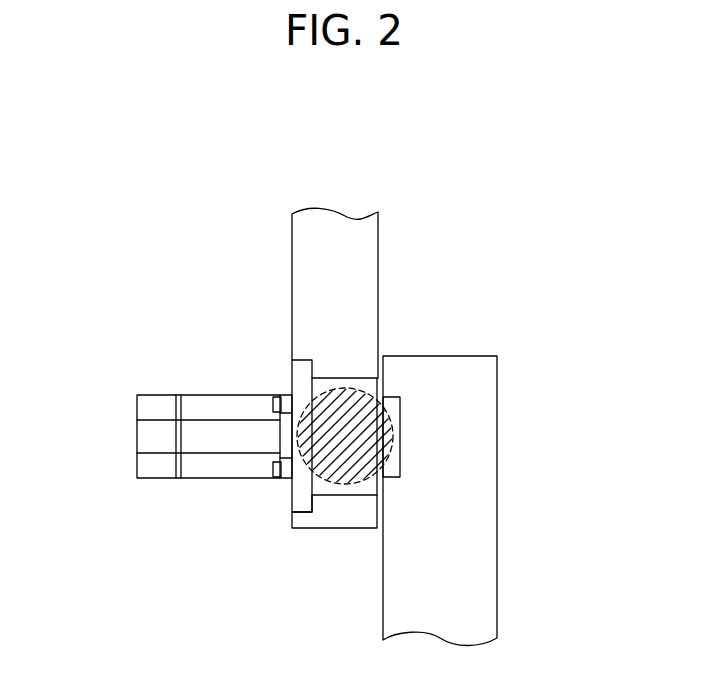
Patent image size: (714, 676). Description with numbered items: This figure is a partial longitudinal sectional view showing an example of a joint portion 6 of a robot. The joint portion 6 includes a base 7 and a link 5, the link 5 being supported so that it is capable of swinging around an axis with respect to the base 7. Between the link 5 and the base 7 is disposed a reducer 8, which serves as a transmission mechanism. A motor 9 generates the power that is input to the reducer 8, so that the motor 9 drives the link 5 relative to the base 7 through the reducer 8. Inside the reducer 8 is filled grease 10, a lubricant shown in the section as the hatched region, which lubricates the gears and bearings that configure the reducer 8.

The link 5 is at (292, 267).
The joint portion 6 is at (481, 291).
The base 7 is at (497, 491).
The reducer 8 is at (336, 511).
The motor 9 is at (137, 436).
The grease 10 is at (325, 391).